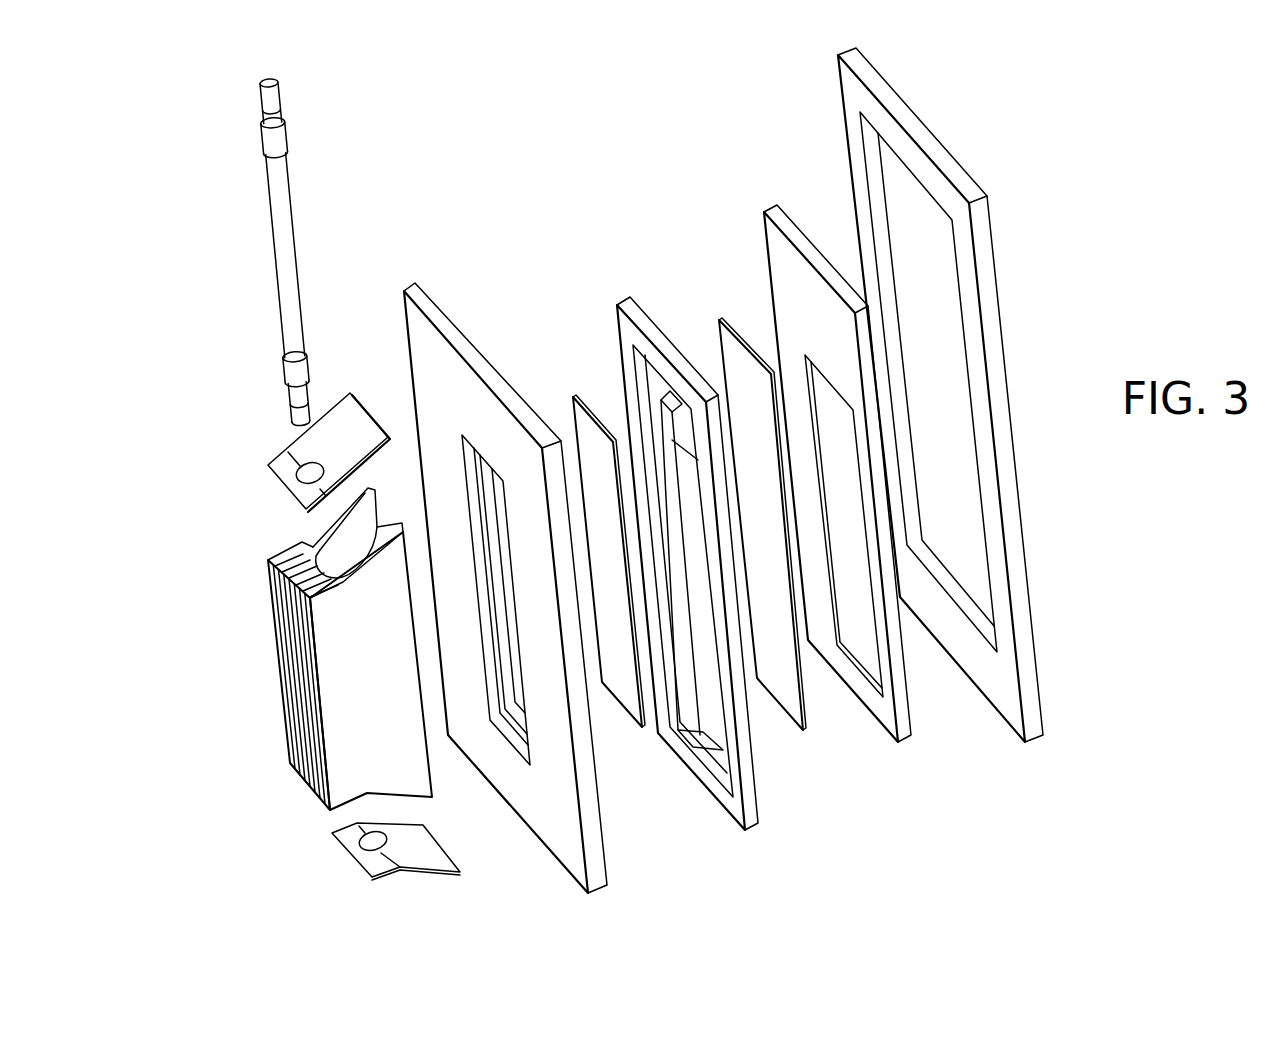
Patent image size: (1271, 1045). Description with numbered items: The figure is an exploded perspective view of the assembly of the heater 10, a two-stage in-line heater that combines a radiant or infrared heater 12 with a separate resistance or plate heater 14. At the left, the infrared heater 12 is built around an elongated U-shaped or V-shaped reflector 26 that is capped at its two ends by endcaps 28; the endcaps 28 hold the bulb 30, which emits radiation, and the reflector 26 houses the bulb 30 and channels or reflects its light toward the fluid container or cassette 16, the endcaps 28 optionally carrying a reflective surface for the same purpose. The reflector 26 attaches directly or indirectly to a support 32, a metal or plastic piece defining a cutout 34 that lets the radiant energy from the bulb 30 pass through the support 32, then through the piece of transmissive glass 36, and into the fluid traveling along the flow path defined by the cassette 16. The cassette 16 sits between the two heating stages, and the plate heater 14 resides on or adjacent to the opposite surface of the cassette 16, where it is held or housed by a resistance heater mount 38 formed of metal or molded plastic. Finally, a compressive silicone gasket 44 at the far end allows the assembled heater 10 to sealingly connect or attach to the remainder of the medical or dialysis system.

The heater 10 is at (545, 190).
The infrared heater unit 12 is at (190, 581).
The plate heater unit 14 is at (719, 320).
The fluid container 16 is at (747, 832).
The reflector 26 is at (351, 688).
The endcaps 28 is at (327, 458).
The bulb 30 is at (295, 230).
The support 32 is at (415, 278).
The cutout 34 is at (464, 435).
The transmissive glass 36 is at (573, 396).
The resistance heater mount 38 is at (764, 211).
The gasket 44 is at (1040, 677).